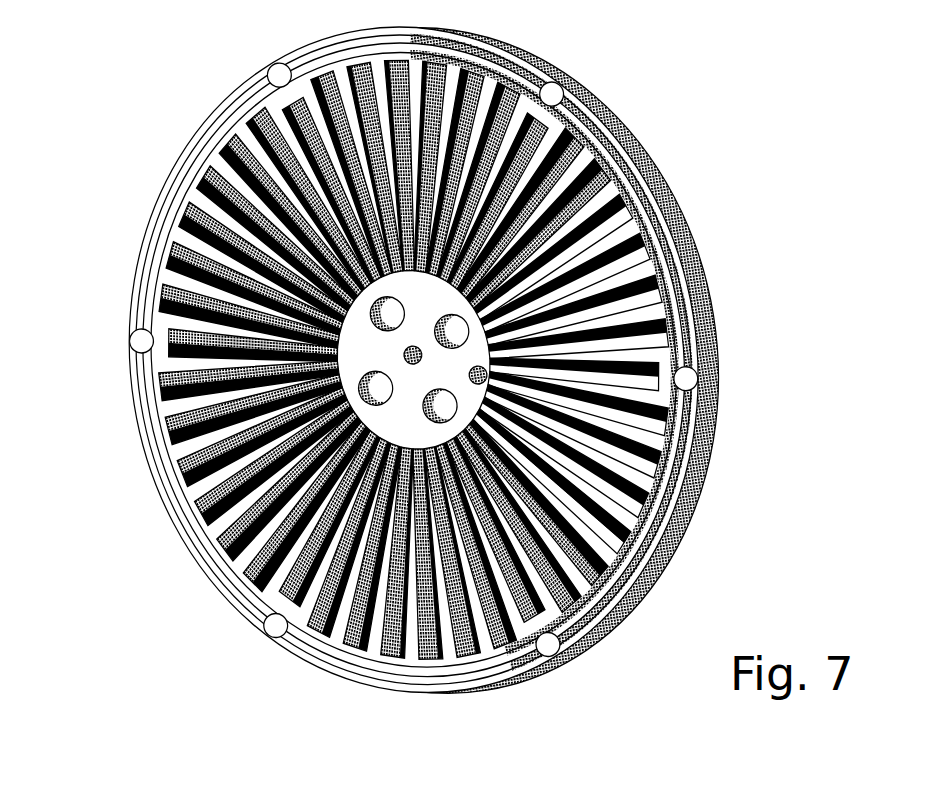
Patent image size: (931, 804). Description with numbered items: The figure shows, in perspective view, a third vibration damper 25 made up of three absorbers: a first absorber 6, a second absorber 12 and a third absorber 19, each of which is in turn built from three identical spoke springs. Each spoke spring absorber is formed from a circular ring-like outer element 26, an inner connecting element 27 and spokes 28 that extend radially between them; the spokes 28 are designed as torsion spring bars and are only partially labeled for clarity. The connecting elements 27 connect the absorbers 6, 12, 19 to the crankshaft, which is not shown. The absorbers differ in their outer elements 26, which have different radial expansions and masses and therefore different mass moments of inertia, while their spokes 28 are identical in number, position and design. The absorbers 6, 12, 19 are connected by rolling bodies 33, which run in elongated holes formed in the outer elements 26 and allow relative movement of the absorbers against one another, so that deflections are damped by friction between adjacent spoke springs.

The first absorber 6 is at (648, 177).
The second absorber 12 is at (632, 140).
The third absorber 19 is at (605, 100).
The third vibration damper 25 is at (140, 448).
The outer element 26 is at (668, 272).
The connecting element 27 is at (648, 493).
The spokes 28 is at (618, 523).
The rolling bodies 33 is at (278, 76).